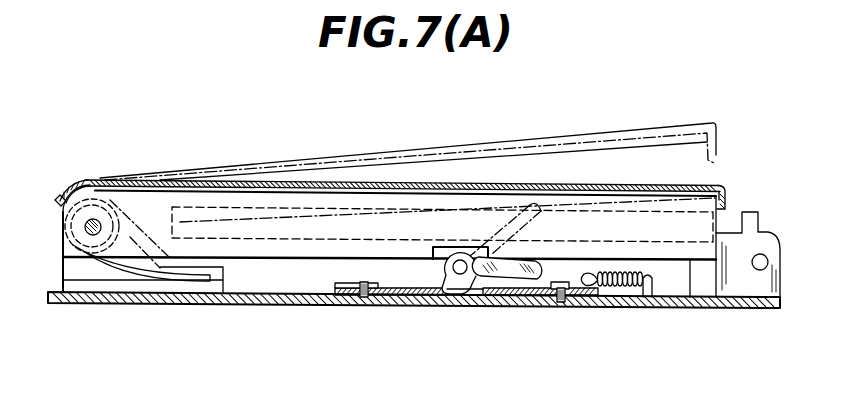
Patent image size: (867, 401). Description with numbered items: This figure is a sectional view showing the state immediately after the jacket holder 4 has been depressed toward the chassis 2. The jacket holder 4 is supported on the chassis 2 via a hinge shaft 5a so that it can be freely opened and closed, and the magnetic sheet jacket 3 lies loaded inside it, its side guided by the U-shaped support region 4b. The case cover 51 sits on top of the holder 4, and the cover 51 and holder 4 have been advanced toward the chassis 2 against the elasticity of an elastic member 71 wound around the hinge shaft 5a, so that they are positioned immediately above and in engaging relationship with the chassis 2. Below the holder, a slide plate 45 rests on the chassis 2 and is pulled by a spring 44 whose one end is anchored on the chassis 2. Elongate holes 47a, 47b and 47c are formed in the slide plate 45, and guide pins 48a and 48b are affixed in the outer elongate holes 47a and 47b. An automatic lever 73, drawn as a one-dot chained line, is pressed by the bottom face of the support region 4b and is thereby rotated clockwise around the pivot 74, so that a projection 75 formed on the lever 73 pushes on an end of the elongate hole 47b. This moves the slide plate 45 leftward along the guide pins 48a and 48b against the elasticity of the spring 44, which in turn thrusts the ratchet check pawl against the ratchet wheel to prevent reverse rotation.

The chassis 2 is at (723, 308).
The magnetic sheet jacket 3 is at (714, 157).
The jacket holder 4 is at (703, 198).
The support region 4b is at (291, 259).
The hinge shaft 5a is at (88, 230).
The spring 44 is at (627, 300).
The slide plate 45 is at (407, 301).
The elongate hole 47a is at (351, 300).
The elongate hole 47b is at (474, 300).
The elongate hole 47c is at (547, 303).
The guide pin 48a is at (365, 300).
The guide pin 48b is at (560, 306).
The case cover 51 is at (632, 130).
The elastic member 71 is at (187, 279).
The automatic lever 73 is at (548, 223).
The pivot 74 is at (447, 270).
The projection 75 is at (503, 278).